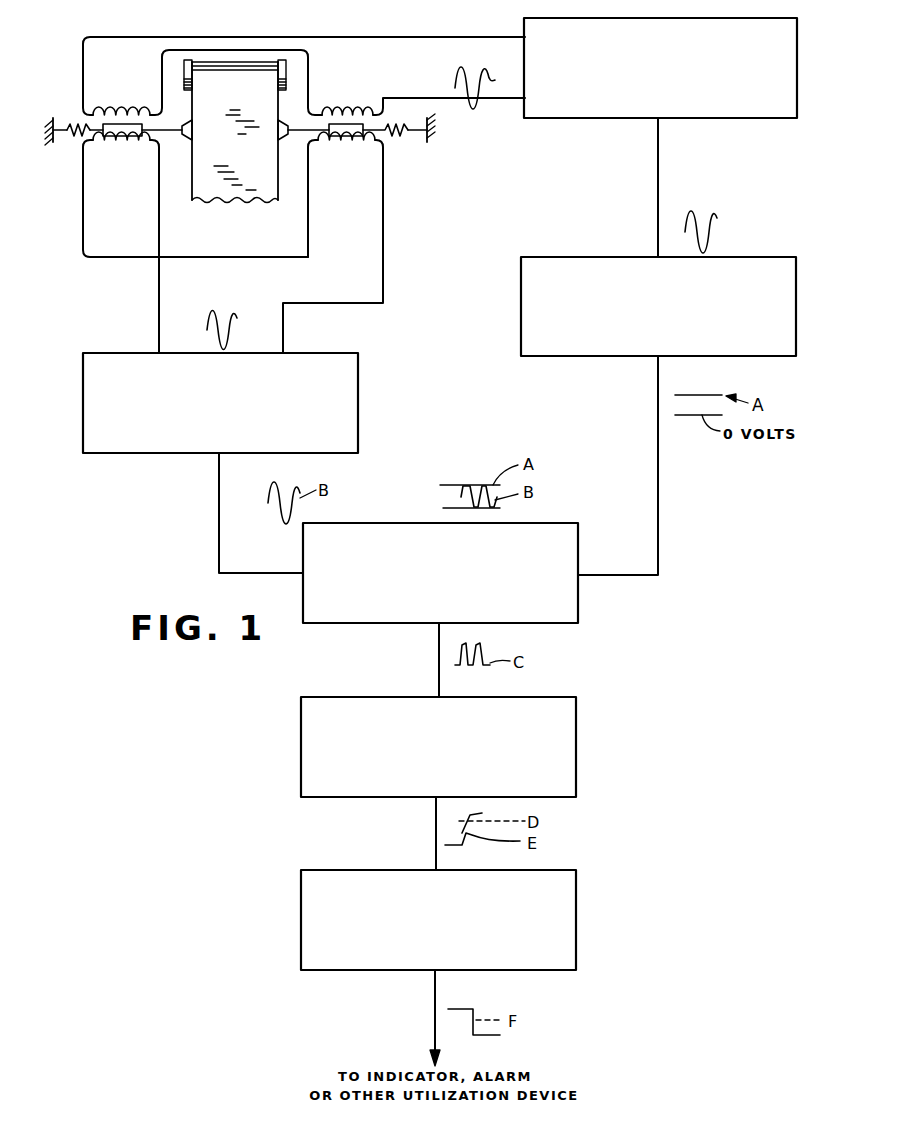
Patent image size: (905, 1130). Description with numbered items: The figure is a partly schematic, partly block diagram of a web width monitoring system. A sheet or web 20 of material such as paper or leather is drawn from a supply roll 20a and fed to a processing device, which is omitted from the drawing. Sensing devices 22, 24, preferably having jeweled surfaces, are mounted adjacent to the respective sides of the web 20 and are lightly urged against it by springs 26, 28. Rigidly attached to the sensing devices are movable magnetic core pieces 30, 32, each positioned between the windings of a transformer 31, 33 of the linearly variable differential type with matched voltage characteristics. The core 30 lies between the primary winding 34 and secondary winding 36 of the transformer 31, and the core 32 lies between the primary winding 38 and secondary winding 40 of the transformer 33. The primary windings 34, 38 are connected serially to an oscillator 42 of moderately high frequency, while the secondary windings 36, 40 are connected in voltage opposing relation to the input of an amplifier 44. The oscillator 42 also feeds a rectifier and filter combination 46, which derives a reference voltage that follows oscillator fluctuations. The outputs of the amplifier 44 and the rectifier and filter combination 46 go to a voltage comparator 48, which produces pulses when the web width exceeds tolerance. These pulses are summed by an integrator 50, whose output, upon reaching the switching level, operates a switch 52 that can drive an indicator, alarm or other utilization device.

The sheet or web 20 is at (236, 196).
The supply roll 20a is at (181, 66).
The sensing device 22 is at (182, 125).
The sensing device 24 is at (287, 125).
The spring 26 is at (72, 121).
The spring 28 is at (410, 134).
The movable magnetic core piece 30 is at (122, 126).
The transformer 31 is at (78, 146).
The movable magnetic core piece 32 is at (350, 128).
The transformer 33 is at (398, 154).
The primary winding 34 is at (98, 108).
The secondary winding 36 is at (122, 156).
The primary winding 38 is at (327, 110).
The secondary winding 40 is at (348, 158).
The oscillator 42 is at (524, 32).
The amplifier 44 is at (338, 353).
The rectifier and filter combination 46 is at (573, 257).
The voltage comparator 48 is at (567, 523).
The integrator 50 is at (556, 697).
The switch 52 is at (545, 870).